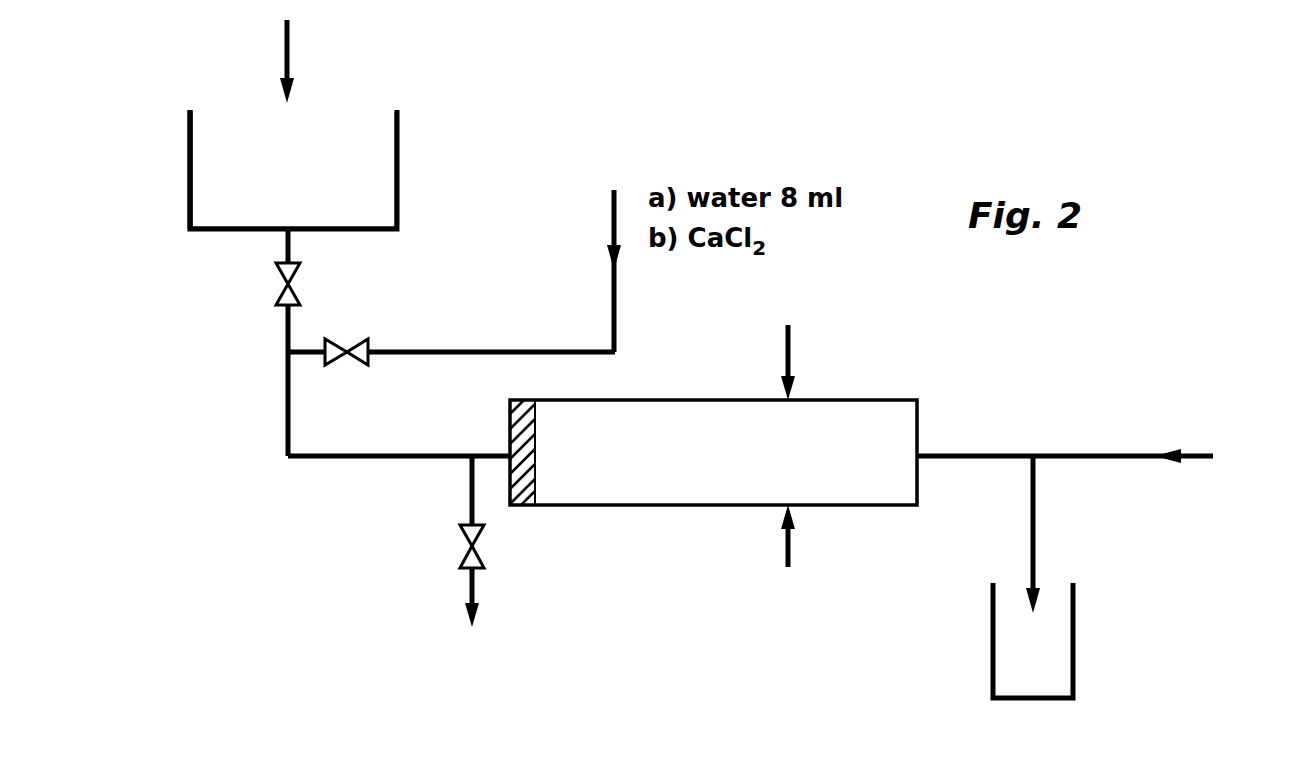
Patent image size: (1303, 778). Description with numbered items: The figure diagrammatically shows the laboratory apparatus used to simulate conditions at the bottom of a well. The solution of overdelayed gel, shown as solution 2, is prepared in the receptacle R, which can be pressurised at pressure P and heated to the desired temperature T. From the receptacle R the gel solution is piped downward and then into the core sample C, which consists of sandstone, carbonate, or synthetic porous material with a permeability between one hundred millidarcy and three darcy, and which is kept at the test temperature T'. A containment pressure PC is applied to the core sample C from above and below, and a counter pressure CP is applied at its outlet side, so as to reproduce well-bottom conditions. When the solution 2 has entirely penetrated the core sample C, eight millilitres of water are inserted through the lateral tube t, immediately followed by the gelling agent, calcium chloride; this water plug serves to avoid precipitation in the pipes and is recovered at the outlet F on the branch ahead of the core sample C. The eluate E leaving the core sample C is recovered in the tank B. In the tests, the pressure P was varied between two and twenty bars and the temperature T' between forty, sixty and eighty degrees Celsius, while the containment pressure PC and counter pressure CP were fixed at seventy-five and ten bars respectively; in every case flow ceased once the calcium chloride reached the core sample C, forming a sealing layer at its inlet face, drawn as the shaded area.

The receptacle R is at (329, 169).
The solution 2 is at (293, 169).
The temperature T is at (173, 169).
The pressure P is at (301, 61).
The lateral tube t is at (451, 341).
The core sample C is at (713, 452).
The temperature T' is at (694, 450).
The containment pressure PC is at (806, 454).
The water recovery outlet F is at (484, 544).
The counter pressure CP is at (1088, 455).
The eluate E is at (1042, 547).
The tank B is at (1050, 638).